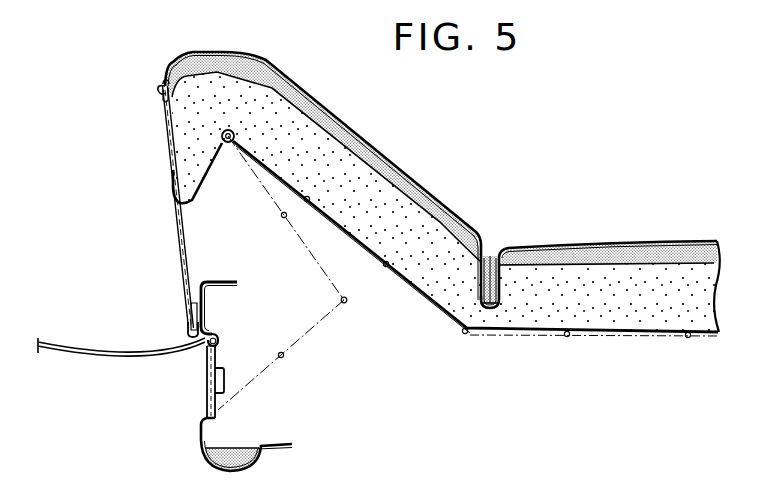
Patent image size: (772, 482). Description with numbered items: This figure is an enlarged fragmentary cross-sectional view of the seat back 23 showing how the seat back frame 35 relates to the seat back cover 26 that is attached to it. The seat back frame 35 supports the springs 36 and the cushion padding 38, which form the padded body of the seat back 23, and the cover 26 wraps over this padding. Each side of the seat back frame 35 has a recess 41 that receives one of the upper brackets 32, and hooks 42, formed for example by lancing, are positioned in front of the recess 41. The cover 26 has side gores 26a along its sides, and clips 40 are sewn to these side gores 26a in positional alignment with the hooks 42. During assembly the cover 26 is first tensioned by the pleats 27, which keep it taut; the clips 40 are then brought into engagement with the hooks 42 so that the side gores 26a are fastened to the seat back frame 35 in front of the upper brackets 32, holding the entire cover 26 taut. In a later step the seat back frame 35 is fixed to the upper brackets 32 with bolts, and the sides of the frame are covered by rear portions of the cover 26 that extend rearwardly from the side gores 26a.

The seat back 23 is at (632, 224).
The cover 26 is at (162, 124).
The side gores 26a is at (174, 232).
The pleats 27 is at (490, 258).
The upper brackets 32 is at (207, 383).
The seat back frame 35 is at (202, 436).
The springs 36 is at (348, 300).
The cushion padding 38 is at (617, 325).
The clips 40 is at (187, 328).
The recess 41 is at (216, 352).
The hooks 42 is at (195, 302).